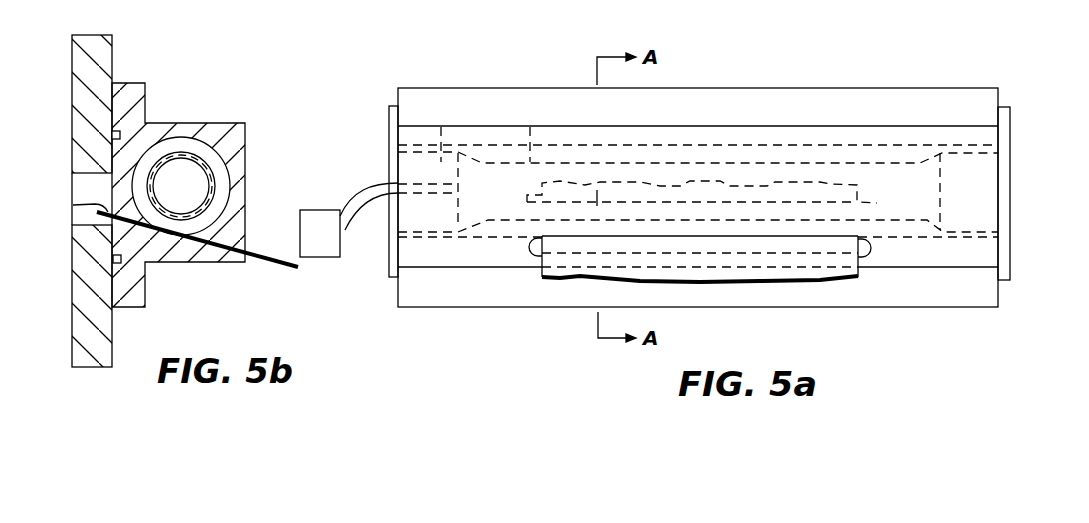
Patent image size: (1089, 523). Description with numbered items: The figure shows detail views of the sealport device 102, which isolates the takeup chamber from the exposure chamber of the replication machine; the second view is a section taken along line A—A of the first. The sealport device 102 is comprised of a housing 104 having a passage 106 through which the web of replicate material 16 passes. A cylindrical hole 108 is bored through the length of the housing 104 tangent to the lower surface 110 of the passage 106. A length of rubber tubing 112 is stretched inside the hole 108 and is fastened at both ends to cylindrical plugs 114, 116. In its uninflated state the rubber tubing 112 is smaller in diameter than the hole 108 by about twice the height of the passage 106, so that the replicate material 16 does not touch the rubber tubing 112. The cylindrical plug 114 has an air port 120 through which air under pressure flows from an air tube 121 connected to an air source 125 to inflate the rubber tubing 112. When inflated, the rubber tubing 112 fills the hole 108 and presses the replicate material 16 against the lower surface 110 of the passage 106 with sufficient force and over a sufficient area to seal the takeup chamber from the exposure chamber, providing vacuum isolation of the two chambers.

In FIG. 5b, the replicate material 16 is at (283, 270).
In FIG. 5a, the replicate material 16 is at (858, 271).
In FIG. 5b, the sealport device 102 is at (174, 201).
In FIG. 5a, the sealport device 102 is at (390, 91).
In FIG. 5b, the housing 104 is at (198, 132).
In FIG. 5a, the housing 104 is at (990, 260).
In FIG. 5b, the passage 106 is at (247, 246).
In FIG. 5a, the passage 106 is at (520, 246).
In FIG. 5b, the cylindrical hole 108 is at (222, 176).
In FIG. 5a, the cylindrical hole 108 is at (900, 158).
In FIG. 5b, the lower surface 110 is at (73, 205).
In FIG. 5b, the rubber tubing 112 is at (188, 216).
In FIG. 5a, the rubber tubing 112 is at (530, 127).
In FIG. 5a, the cylindrical plug 114 is at (441, 127).
In FIG. 5a, the cylindrical plug 116 is at (963, 218).
In FIG. 5a, the air port 120 is at (428, 190).
In FIG. 5a, the air tube 121 is at (362, 194).
In FIG. 5a, the air source 125 is at (341, 254).